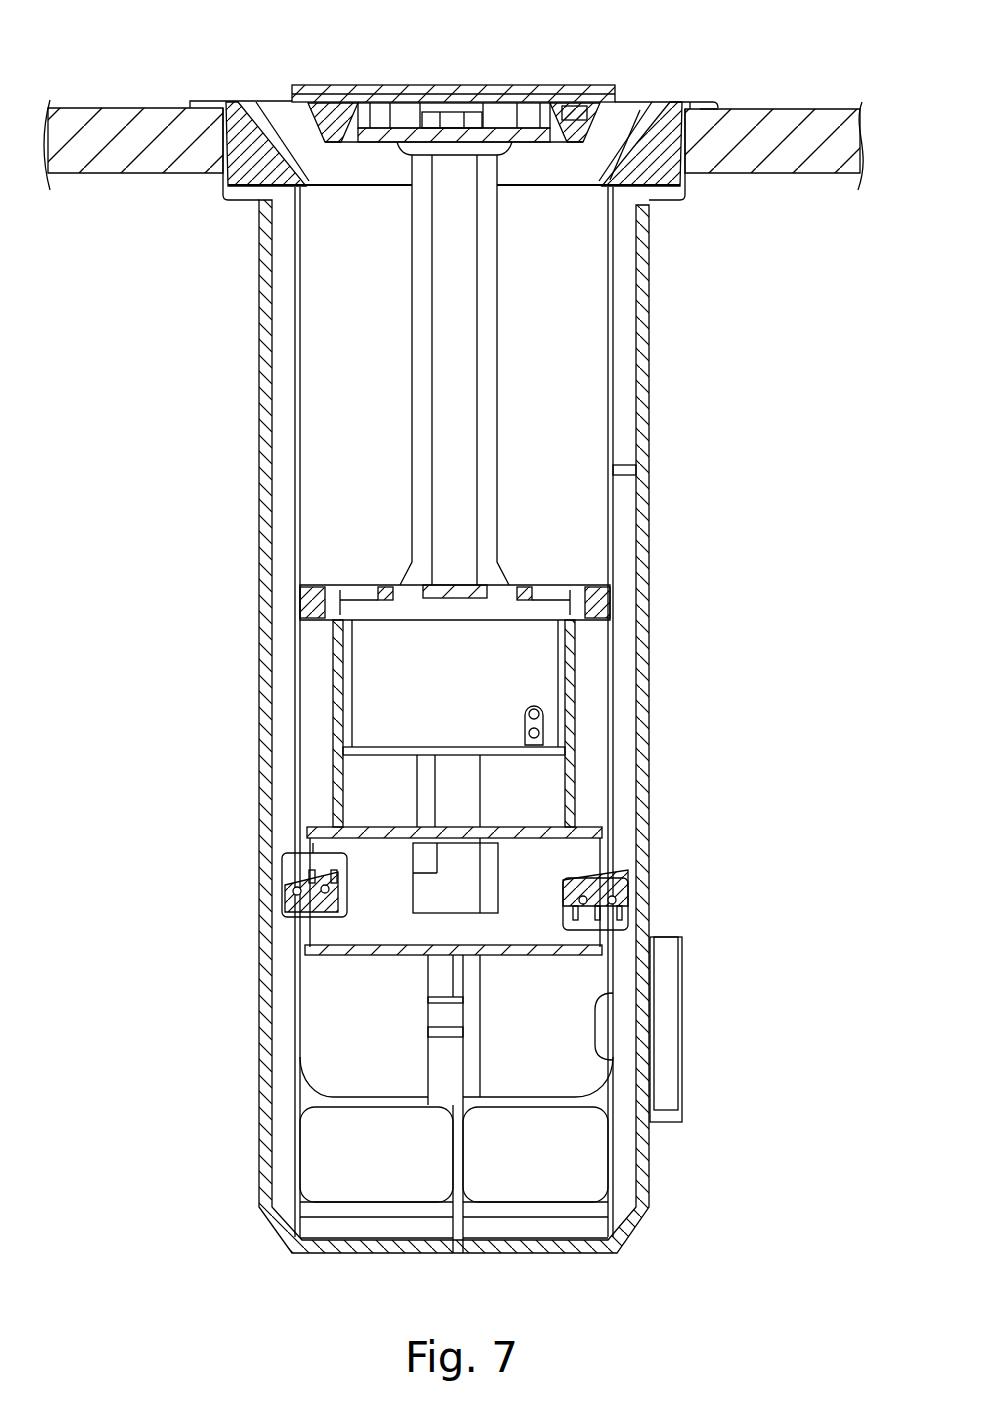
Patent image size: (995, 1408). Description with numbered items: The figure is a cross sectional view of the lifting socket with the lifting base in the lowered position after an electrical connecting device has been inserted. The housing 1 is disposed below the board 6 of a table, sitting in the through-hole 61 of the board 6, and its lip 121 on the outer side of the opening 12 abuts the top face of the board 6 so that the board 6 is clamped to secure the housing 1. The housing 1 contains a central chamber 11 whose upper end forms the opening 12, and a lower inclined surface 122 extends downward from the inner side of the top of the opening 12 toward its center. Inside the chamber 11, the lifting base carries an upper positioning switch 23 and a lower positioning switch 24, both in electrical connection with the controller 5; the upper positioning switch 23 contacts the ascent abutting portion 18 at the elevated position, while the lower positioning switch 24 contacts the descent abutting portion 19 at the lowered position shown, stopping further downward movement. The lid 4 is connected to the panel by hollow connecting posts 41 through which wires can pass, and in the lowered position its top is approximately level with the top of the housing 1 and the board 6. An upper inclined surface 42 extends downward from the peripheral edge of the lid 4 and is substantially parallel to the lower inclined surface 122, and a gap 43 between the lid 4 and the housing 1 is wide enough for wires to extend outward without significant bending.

The housing 1 is at (674, 409).
The lid 4 is at (506, 88).
The controller 5 is at (459, 105).
The board 6 is at (797, 130).
The chamber 11 is at (575, 545).
The opening 12 is at (550, 180).
The ascent abutting portion 18 is at (625, 468).
The descent abutting portion 19 is at (288, 923).
The upper positioning switch 23 is at (605, 890).
The lower positioning switch 24 is at (300, 893).
The connecting post 41 is at (420, 253).
The upper inclined surface 42 is at (592, 105).
The gap 43 is at (627, 130).
The through-hole 61 is at (713, 128).
The lip 121 is at (696, 102).
The lower inclined surface 122 is at (652, 118).